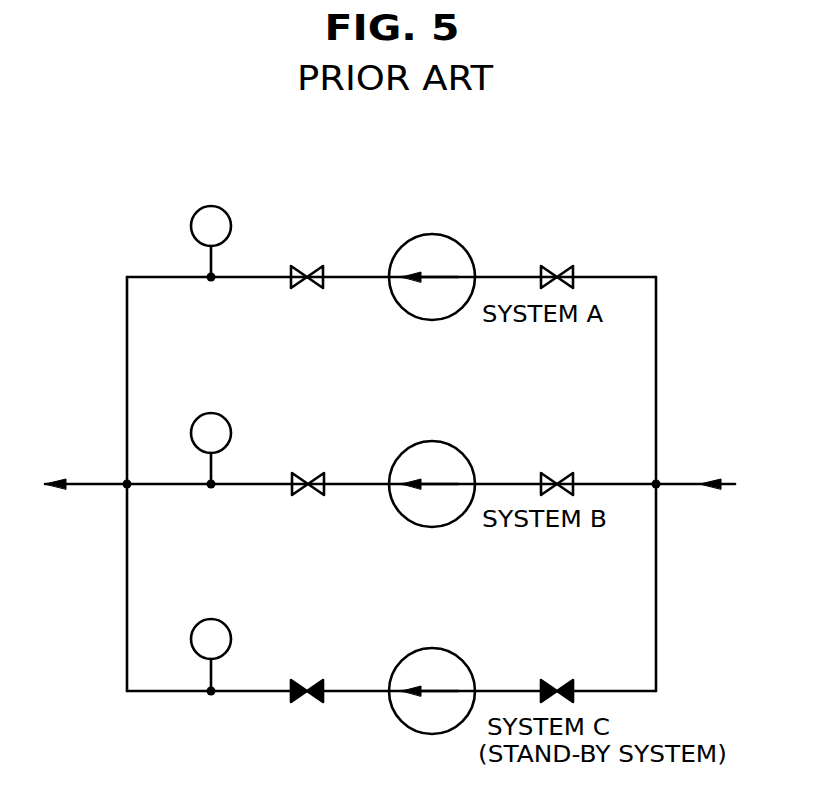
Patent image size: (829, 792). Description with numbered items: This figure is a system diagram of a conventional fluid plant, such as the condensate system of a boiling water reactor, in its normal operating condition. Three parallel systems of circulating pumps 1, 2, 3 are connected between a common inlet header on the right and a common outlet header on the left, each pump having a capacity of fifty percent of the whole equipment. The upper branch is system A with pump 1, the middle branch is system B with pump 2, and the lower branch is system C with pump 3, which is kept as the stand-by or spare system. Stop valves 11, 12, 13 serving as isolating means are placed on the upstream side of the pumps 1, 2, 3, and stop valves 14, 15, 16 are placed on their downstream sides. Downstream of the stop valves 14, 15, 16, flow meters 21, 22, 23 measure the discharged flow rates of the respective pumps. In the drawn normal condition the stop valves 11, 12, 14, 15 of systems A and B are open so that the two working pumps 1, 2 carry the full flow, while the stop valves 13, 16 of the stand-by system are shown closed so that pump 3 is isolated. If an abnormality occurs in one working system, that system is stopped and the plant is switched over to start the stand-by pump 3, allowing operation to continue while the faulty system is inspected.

The circulating pump 1 is at (432, 234).
The circulating pump 2 is at (432, 441).
The circulating pump 3 is at (432, 648).
The stop valve 11 is at (557, 266).
The stop valve 12 is at (557, 474).
The stop valve 13 is at (557, 680).
The stop valve 14 is at (307, 266).
The stop valve 15 is at (308, 473).
The stop valve 16 is at (307, 680).
The flow meter 21 is at (209, 206).
The flow meter 22 is at (211, 413).
The flow meter 23 is at (211, 619).